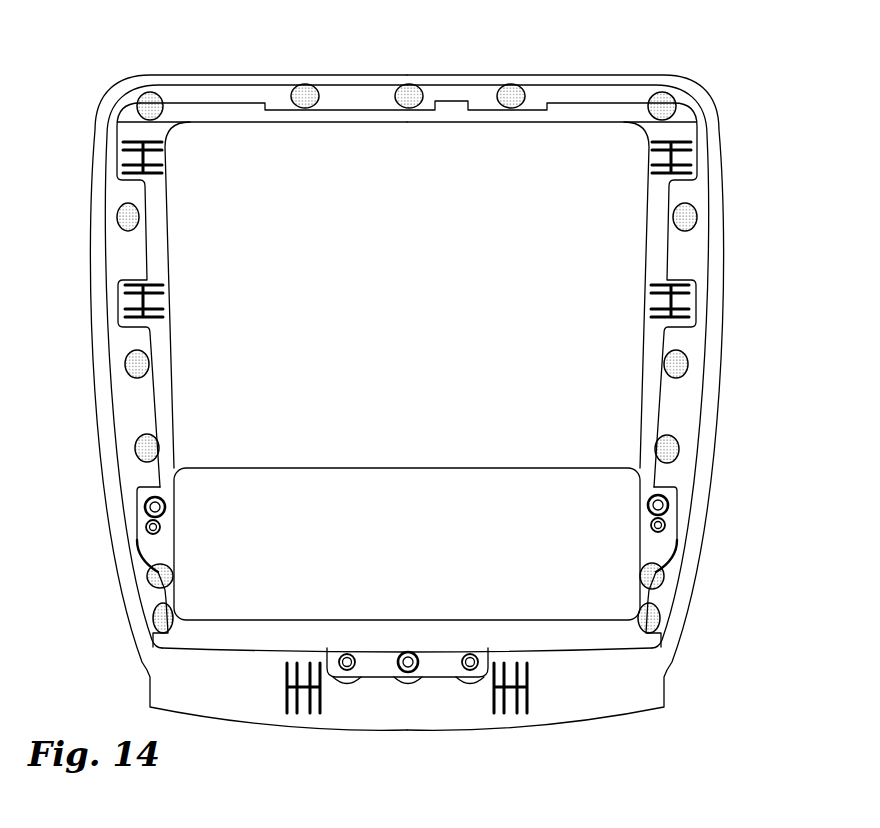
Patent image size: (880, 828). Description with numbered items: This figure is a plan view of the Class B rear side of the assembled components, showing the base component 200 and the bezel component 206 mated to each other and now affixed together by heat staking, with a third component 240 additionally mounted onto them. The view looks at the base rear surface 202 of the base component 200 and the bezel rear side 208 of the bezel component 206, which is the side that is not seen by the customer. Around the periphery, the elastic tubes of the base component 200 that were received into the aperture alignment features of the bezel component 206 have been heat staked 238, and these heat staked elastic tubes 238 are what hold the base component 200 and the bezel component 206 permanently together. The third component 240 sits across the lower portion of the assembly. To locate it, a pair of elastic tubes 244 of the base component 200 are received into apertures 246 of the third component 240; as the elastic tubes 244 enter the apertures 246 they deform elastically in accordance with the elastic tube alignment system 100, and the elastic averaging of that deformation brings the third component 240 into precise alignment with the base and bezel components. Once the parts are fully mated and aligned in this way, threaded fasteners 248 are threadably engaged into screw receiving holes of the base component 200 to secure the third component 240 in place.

The elastic tube alignment system 100 is at (172, 543).
The base component 200 is at (638, 243).
The base rear surface 202 is at (574, 112).
The bezel component 206 is at (735, 172).
The bezel rear side 208 is at (686, 402).
The heat staked elastic tubes 238 is at (157, 100).
The third component 240 is at (362, 466).
The elastic tubes 244 is at (162, 527).
The apertures 246 is at (147, 542).
The threaded fasteners 248 is at (143, 505).